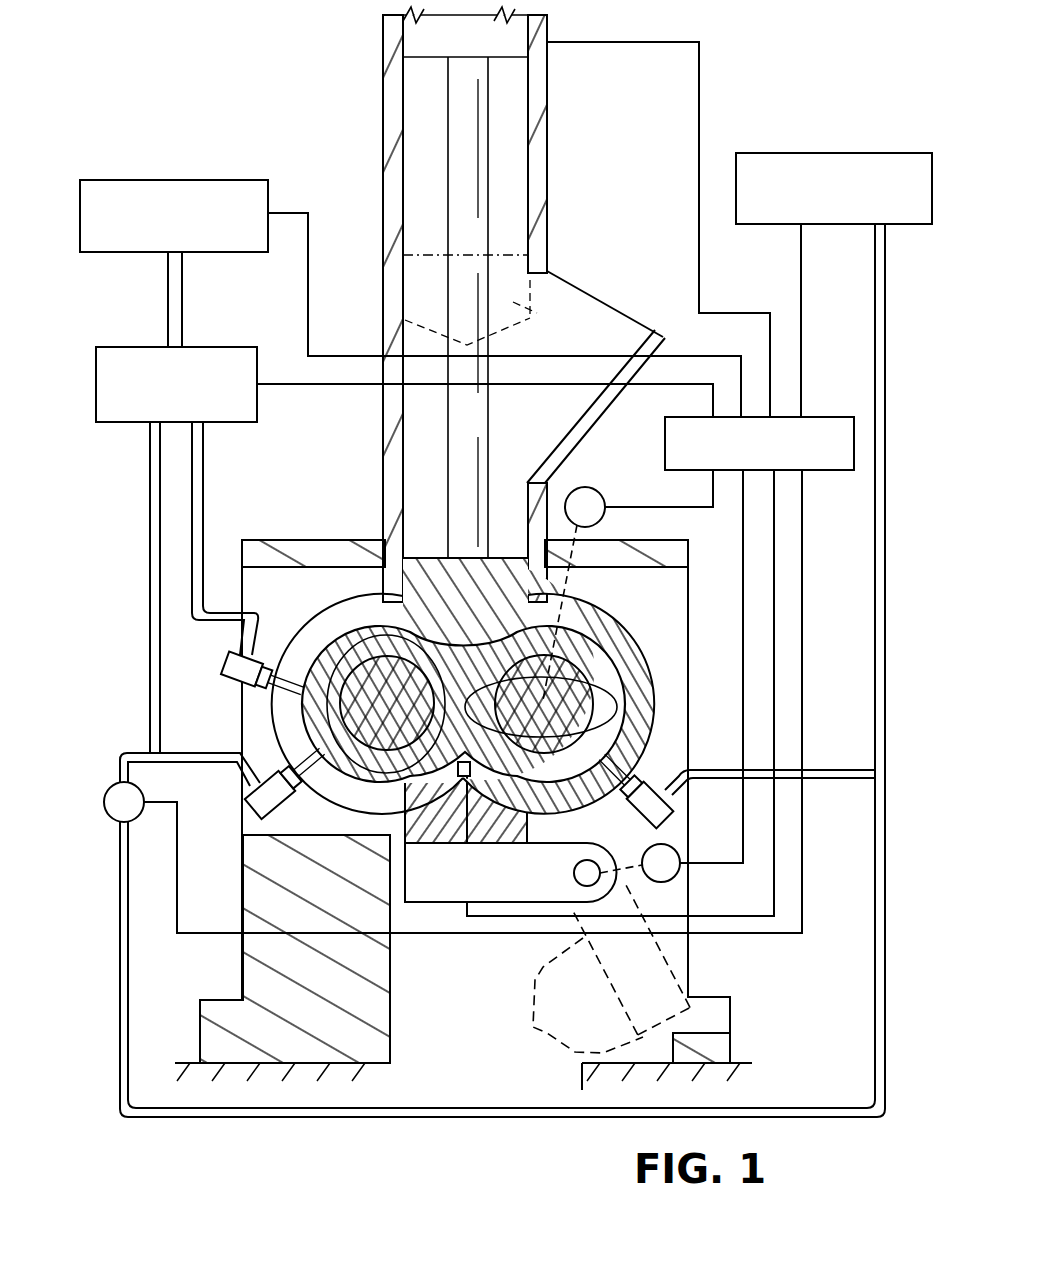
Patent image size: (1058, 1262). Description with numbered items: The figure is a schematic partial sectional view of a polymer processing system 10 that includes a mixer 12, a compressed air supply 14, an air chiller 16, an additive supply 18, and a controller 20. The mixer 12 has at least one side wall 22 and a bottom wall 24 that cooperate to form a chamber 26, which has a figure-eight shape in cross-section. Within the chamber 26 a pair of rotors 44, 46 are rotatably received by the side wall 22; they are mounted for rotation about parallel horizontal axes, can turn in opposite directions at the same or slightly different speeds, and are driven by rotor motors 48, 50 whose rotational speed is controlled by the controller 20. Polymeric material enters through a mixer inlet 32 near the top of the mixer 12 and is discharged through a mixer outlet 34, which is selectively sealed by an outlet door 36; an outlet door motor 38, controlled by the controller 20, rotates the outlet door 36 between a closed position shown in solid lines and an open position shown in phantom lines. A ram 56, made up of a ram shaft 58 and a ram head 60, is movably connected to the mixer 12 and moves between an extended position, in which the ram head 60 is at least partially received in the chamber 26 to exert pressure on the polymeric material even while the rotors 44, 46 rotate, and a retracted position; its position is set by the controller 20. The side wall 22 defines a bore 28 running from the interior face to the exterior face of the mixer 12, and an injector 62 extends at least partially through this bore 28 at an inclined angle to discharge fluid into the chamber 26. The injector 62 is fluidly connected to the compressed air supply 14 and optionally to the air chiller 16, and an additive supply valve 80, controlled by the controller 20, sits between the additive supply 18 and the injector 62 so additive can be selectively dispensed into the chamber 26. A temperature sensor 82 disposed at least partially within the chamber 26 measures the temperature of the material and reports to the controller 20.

The polymer processing system 10 is at (135, 77).
The mixer 12 is at (298, 535).
The compressed air supply 14 is at (168, 180).
The air chiller 16 is at (138, 347).
The additive supply 18 is at (813, 153).
The controller 20 is at (815, 417).
The side wall 22 is at (613, 640).
The bottom wall 24 is at (300, 853).
The chamber 26 is at (600, 663).
The bore 28 is at (273, 728).
The mixer inlet 32 is at (437, 548).
The mixer outlet 34 is at (407, 783).
The outlet door 36 is at (510, 830).
The outlet door motor 38 is at (672, 881).
The rotor 44 is at (358, 672).
The rotor 46 is at (558, 673).
The rotor motor 48 is at (596, 515).
The rotor motor 50 is at (575, 487).
The ram 56 is at (404, 43).
The ram shaft 58 is at (473, 412).
The ram head 60 is at (537, 313).
The injector 62 is at (474, 750).
The additive supply valve 80 is at (107, 820).
The temperature sensor 82 is at (467, 777).